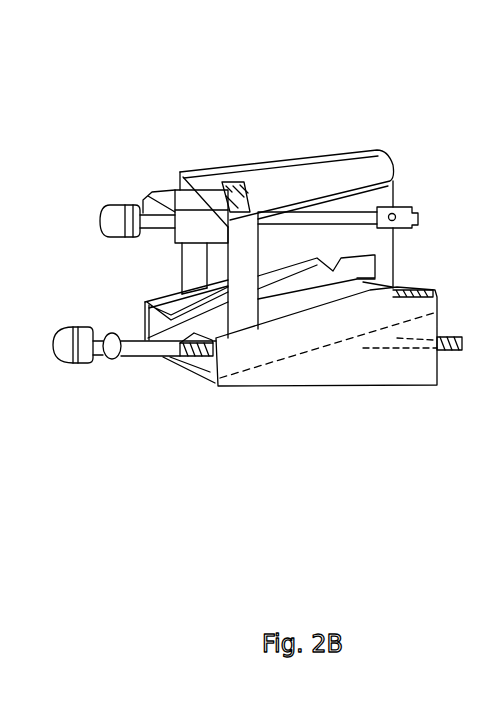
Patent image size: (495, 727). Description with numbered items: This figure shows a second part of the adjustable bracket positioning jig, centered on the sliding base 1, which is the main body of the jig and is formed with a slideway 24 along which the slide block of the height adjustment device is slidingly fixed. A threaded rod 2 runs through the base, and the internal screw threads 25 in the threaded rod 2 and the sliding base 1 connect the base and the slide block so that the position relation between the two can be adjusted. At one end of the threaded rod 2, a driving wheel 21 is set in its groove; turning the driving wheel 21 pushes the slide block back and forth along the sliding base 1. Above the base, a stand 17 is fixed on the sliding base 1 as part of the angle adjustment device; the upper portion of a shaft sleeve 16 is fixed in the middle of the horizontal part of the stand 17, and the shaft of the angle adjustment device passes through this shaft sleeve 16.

The sliding base 1 is at (323, 386).
The threaded rod 2 is at (452, 352).
The shaft sleeve 16 is at (179, 172).
The stand 17 is at (221, 182).
The driving wheel 21 is at (119, 360).
The slideway 24 is at (203, 365).
The inner screw thread 25 is at (404, 386).